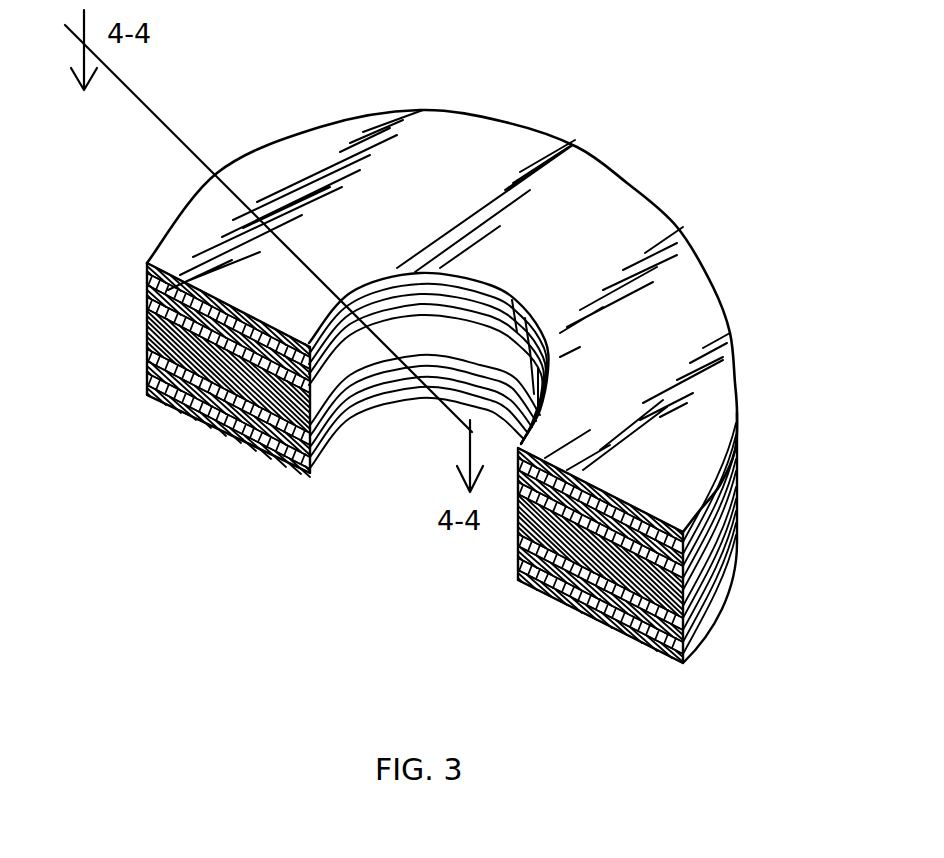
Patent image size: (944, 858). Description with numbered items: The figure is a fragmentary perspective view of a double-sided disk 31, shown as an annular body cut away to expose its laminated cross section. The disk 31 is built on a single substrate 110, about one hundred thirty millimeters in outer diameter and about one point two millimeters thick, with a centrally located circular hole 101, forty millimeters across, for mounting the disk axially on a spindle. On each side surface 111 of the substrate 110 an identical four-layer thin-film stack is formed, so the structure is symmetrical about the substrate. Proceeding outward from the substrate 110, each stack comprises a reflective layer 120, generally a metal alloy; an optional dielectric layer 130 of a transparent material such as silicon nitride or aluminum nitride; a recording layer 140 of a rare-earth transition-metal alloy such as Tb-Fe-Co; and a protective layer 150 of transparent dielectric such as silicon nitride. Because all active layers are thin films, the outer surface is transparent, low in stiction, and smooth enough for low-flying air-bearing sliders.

The disk 31 is at (415, 86).
The circular hole 101 is at (483, 290).
The substrate 110 is at (147, 333).
The side surface 111 is at (715, 530).
The reflective layer 120 is at (147, 305).
The dielectric layer 130 is at (147, 293).
The recording layer 140 is at (147, 280).
The protective layer 150 is at (147, 267).